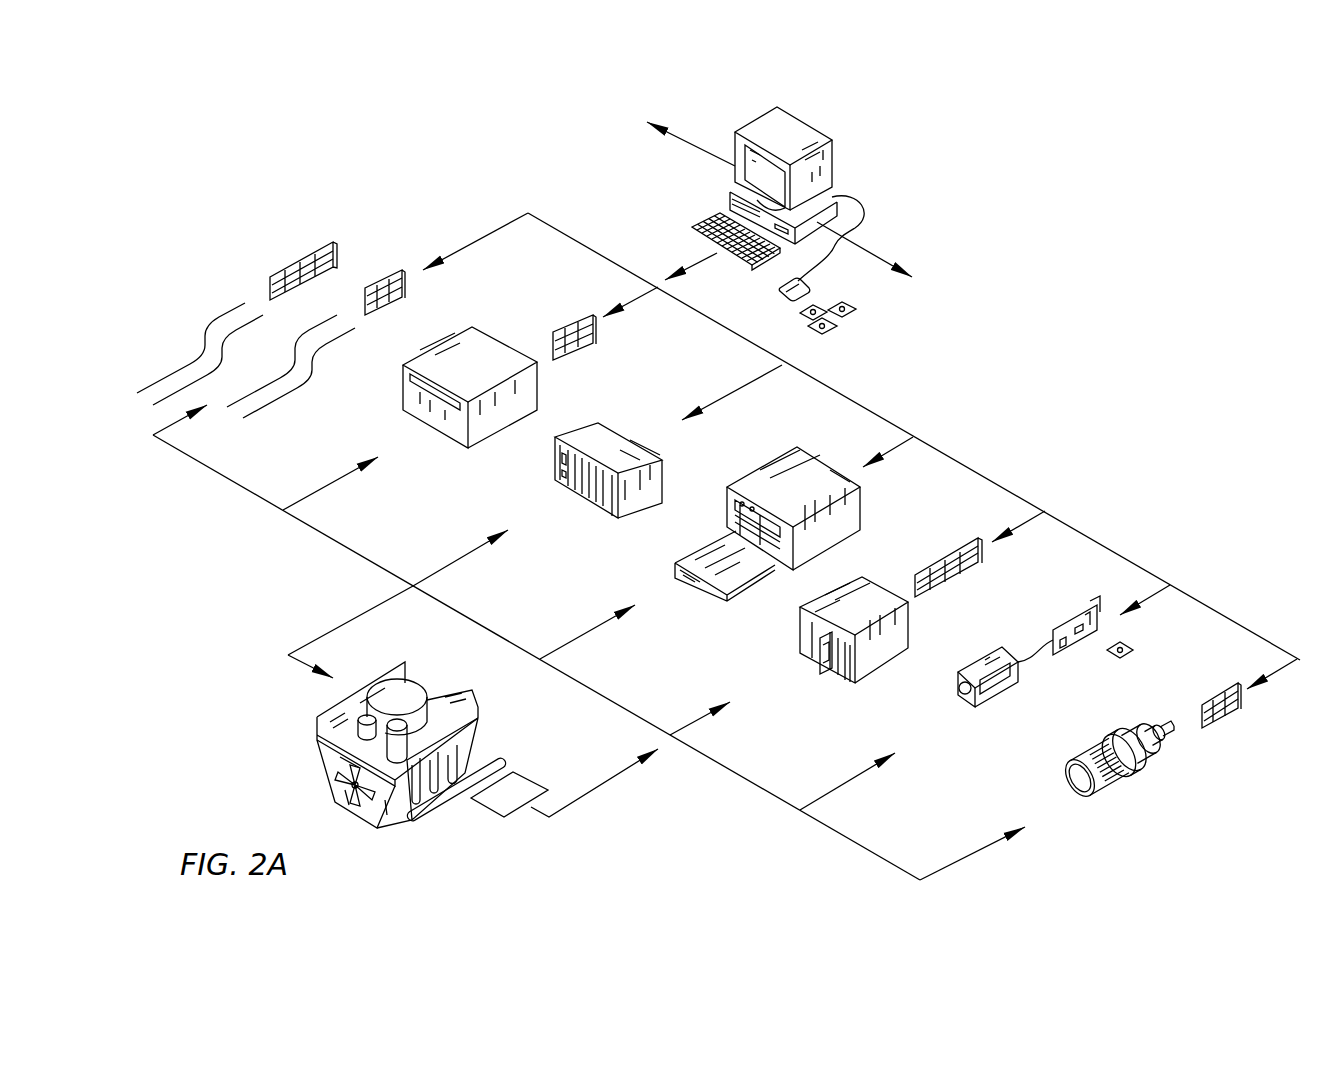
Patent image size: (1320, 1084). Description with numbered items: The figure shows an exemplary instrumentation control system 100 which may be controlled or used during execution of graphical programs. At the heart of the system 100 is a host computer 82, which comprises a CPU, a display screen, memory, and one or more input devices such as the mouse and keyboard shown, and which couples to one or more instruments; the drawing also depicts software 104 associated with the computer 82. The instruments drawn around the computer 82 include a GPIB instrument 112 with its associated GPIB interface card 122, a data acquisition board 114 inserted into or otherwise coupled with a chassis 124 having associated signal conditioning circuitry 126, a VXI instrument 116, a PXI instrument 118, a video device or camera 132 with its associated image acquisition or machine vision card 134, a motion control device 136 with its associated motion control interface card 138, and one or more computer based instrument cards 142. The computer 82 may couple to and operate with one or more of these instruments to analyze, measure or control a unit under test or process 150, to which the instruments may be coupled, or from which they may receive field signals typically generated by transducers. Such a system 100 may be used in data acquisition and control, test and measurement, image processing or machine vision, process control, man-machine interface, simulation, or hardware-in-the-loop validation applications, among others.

The instrumentation control system 100 is at (1103, 218).
The host computer 82 is at (802, 128).
The software 104 is at (828, 330).
The computer based instrument cards 142 is at (287, 265).
The GPIB instrument 112 is at (430, 357).
The GPIB interface card 122 is at (565, 325).
The PXI instrument 118 is at (587, 503).
The VXI instrument 116 is at (765, 473).
The data acquisition board 114 is at (952, 608).
The image acquisition card 134 is at (1062, 618).
The chassis 124 is at (812, 637).
The signal conditioning circuitry 126 is at (823, 663).
The video device or camera 132 is at (997, 693).
The motion control device 136 is at (1117, 783).
The motion control interface card 138 is at (1225, 723).
The unit under test or process 150 is at (327, 767).